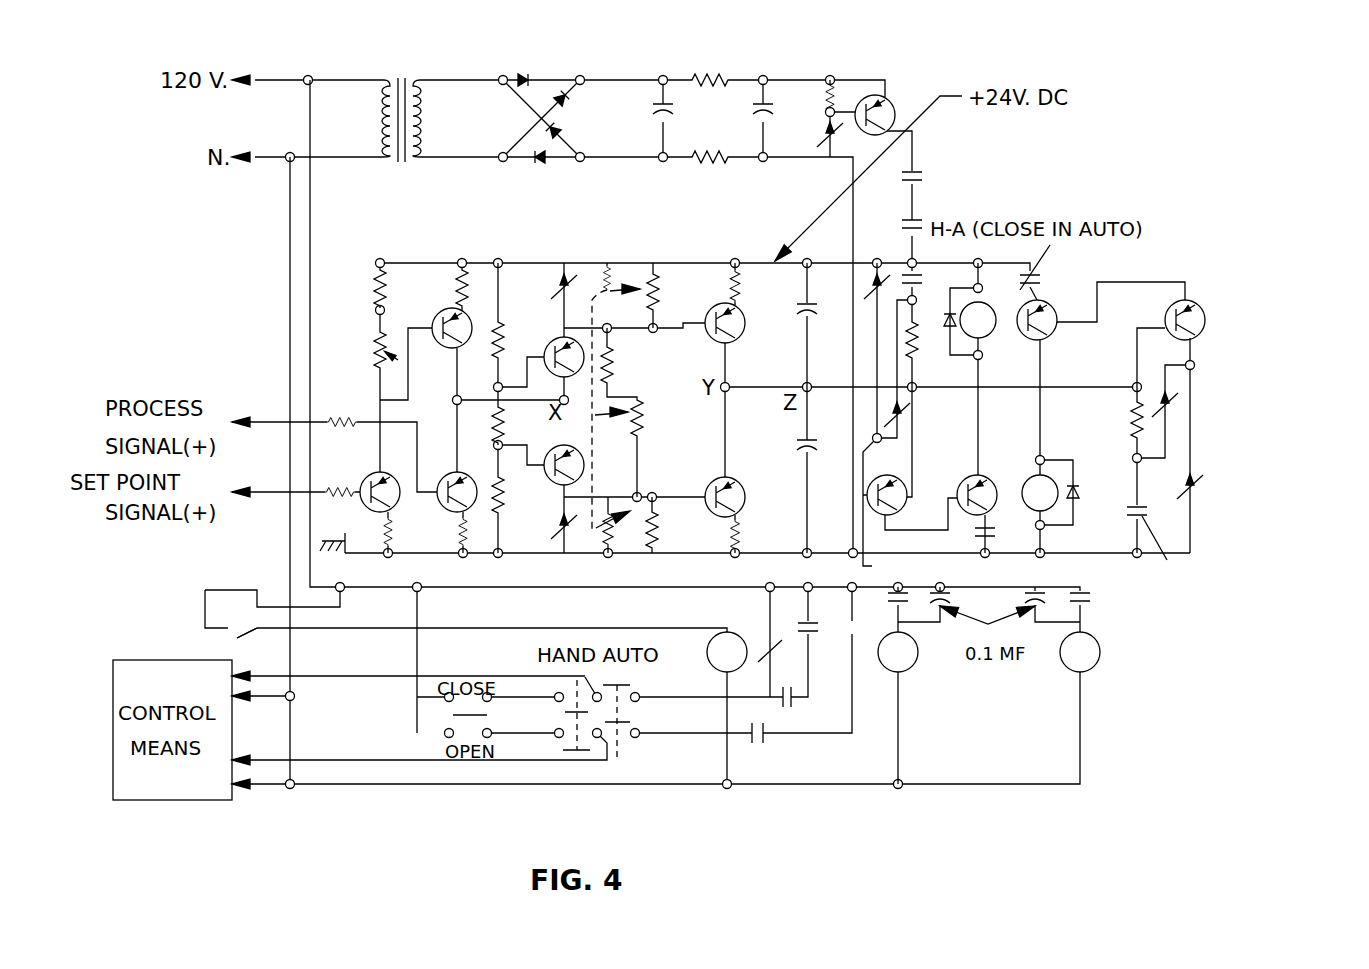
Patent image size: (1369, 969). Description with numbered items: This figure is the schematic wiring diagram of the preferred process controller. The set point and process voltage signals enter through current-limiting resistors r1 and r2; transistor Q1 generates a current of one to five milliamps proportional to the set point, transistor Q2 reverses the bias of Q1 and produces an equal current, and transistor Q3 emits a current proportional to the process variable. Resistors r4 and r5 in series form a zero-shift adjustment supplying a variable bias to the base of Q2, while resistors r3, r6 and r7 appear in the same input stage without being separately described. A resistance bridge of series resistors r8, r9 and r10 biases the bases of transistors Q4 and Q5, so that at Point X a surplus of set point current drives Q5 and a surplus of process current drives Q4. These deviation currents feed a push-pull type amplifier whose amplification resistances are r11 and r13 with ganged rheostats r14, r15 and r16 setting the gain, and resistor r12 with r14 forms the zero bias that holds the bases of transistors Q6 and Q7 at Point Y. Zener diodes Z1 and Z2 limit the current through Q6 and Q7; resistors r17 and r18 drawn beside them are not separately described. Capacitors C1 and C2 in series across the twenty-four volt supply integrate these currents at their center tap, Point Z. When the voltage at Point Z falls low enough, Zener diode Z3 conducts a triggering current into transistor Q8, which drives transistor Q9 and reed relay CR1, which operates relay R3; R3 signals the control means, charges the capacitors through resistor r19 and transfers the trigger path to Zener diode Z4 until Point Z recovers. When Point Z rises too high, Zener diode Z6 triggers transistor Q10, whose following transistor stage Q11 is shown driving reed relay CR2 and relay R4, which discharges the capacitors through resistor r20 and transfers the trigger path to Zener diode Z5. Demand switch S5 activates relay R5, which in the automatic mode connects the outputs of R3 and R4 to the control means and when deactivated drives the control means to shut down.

The transistor Q1 is at (360, 500).
The transistor Q2 is at (437, 312).
The transistor Q3 is at (440, 507).
The transistor Q4 is at (551, 340).
The transistor Q5 is at (553, 487).
The transistor Q6 is at (718, 305).
The transistor Q7 is at (725, 517).
The transistor Q8 is at (900, 516).
The transistor Q9 is at (993, 475).
The transistor Q10 is at (1057, 313).
The transistor Q11 is at (1205, 320).
The resistor r1 is at (342, 410).
The resistor r2 is at (340, 475).
The resistor r3 is at (371, 532).
The zero-shift-adjustment resistor r4 is at (363, 288).
The emitter resistor r5 is at (369, 351).
The resistor r6 is at (447, 288).
The resistor r7 is at (447, 532).
The resistance bridge resistor r8 is at (488, 342).
The resistance bridge resistor r9 is at (488, 425).
The resistance bridge resistor r10 is at (515, 495).
The amplification resistor r11 is at (616, 268).
The zero bias resistor r12 is at (625, 363).
The amplification resistor r13 is at (620, 537).
The rheostat r14 is at (653, 447).
The rheostat r15 is at (669, 295).
The rheostat r16 is at (668, 525).
The resistor r17 is at (752, 287).
The resistor r18 is at (753, 534).
The charging resistor r19 is at (925, 353).
The discharging resistor r20 is at (1118, 424).
The Zener diode Z1 is at (575, 275).
The Zener diode Z2 is at (577, 518).
The Zener diode Z3 is at (872, 278).
The Zener diode Z4 is at (893, 494).
The Zener diode Z5 is at (1178, 395).
The Zener diode Z6 is at (1203, 478).
The capacitor C1 is at (792, 325).
The capacitor C2 is at (792, 470).
The sensitive coil reed relay CR1 is at (925, 459).
The sensitive coil reed relay CR2 is at (1075, 547).
The relay R3 is at (921, 262).
The relay R4 is at (975, 520).
The relay R5 is at (834, 465).
The demand switch S5 is at (208, 634).